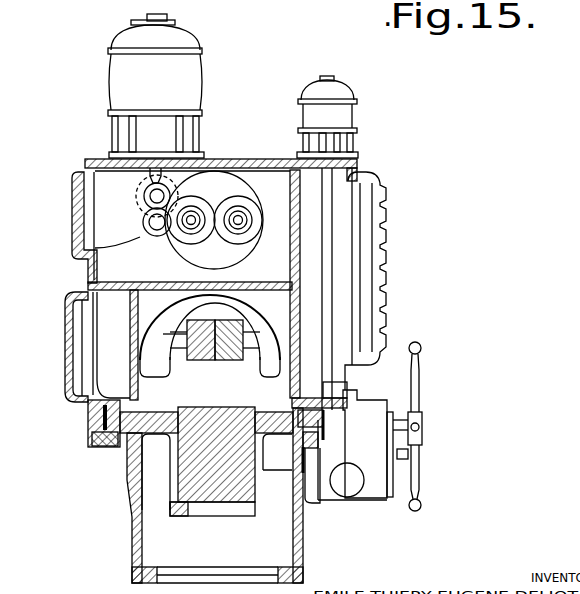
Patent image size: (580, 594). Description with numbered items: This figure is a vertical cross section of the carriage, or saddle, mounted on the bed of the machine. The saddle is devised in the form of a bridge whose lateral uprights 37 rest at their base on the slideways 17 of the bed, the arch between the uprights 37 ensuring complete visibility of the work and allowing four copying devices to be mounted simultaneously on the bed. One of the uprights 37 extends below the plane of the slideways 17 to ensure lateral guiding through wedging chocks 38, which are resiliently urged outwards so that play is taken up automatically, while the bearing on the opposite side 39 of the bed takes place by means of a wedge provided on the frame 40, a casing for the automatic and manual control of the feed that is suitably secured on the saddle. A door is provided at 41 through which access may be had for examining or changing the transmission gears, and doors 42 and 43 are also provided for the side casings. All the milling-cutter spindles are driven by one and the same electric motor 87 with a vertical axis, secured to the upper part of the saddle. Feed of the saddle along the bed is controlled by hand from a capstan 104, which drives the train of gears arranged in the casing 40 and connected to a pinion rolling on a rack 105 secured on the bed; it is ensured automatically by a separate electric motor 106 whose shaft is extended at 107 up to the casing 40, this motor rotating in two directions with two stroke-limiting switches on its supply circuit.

The slideways 17 is at (108, 448).
The lateral uprights 37 is at (303, 372).
The wedging chocks 38 is at (97, 428).
The opposite side of the bed 39 is at (328, 427).
The frame 40 is at (370, 480).
The door 41 is at (78, 208).
The door 42 is at (68, 335).
The door 43 is at (366, 233).
The electric motor 87 is at (117, 85).
The capstan 104 is at (421, 508).
The rack 105 is at (313, 450).
The electric motor 106 is at (338, 118).
The shaft extension 107 is at (336, 277).